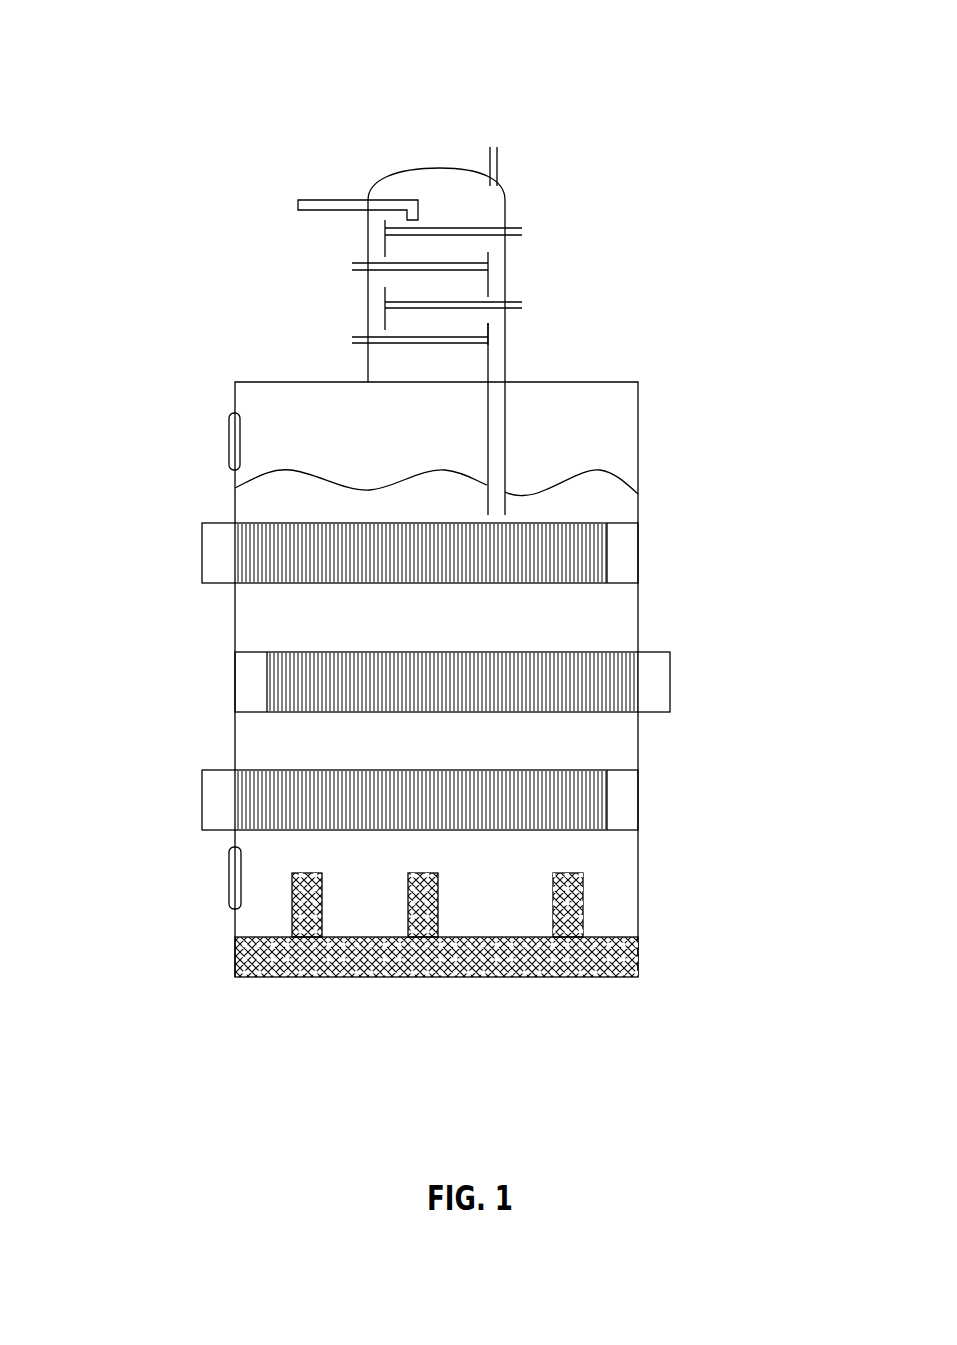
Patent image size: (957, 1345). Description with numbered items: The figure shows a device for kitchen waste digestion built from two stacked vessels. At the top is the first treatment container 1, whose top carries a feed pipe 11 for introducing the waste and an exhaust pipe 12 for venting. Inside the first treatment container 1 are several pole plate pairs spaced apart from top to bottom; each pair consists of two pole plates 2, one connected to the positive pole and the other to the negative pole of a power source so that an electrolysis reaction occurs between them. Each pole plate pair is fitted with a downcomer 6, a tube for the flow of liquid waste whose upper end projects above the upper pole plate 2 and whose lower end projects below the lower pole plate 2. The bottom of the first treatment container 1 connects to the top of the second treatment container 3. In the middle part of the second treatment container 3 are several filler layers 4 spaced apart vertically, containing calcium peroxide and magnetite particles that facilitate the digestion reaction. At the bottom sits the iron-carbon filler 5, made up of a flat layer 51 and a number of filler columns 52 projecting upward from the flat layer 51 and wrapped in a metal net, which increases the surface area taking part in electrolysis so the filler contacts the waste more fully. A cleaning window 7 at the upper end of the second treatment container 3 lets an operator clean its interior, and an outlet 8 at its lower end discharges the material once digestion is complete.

The first treatment container 1 is at (368, 312).
The feed pipe 11 is at (330, 198).
The exhaust pipe 12 is at (498, 168).
The pole plate 2 is at (442, 228).
The downcomer 6 is at (488, 252).
The cleaning window 7 is at (231, 442).
The second treatment container 3 is at (640, 462).
The filler layer 4 is at (547, 558).
The outlet 8 is at (230, 878).
The iron-carbon filler 5 is at (506, 958).
The flat layer 51 is at (557, 963).
The filler column 52 is at (583, 907).